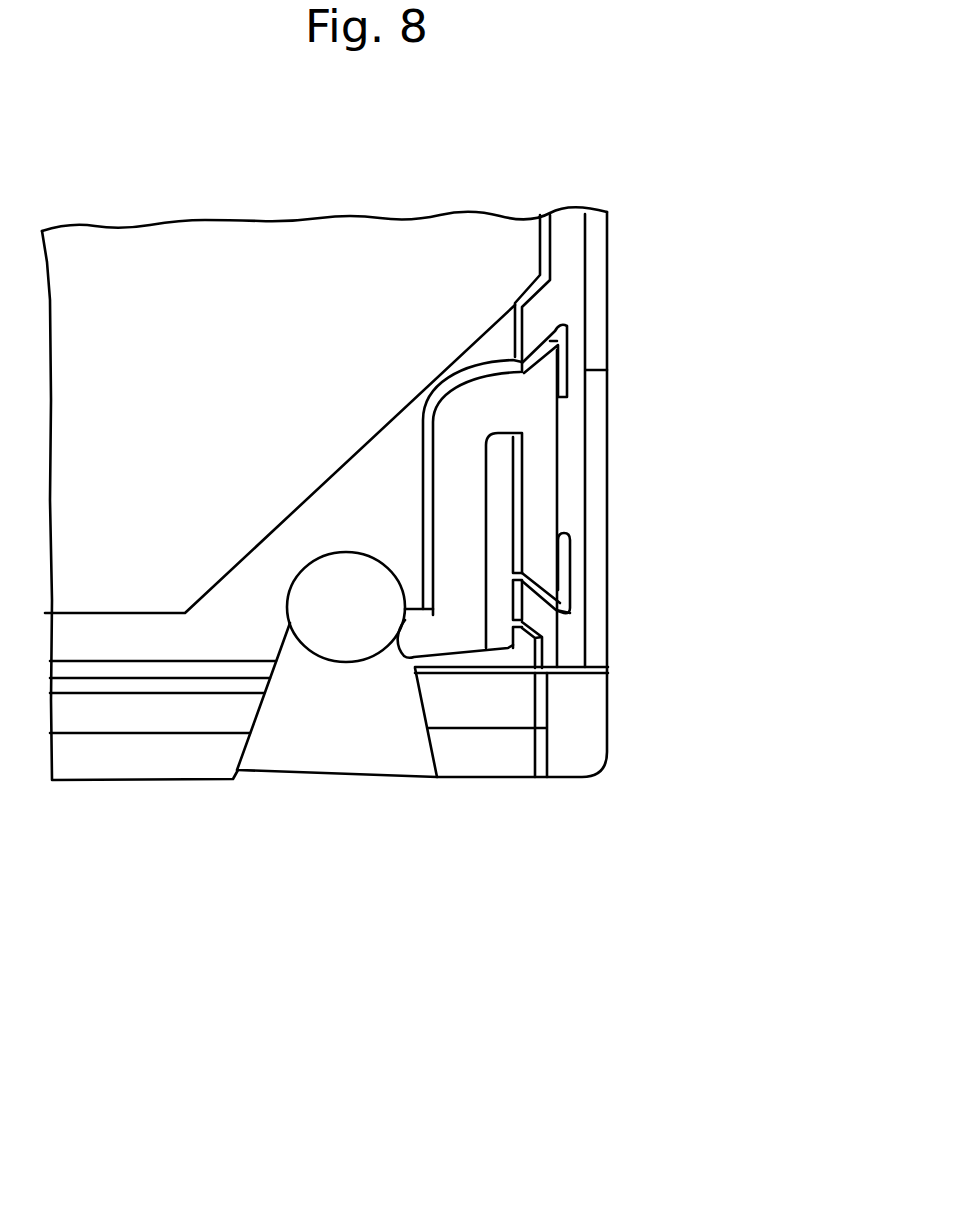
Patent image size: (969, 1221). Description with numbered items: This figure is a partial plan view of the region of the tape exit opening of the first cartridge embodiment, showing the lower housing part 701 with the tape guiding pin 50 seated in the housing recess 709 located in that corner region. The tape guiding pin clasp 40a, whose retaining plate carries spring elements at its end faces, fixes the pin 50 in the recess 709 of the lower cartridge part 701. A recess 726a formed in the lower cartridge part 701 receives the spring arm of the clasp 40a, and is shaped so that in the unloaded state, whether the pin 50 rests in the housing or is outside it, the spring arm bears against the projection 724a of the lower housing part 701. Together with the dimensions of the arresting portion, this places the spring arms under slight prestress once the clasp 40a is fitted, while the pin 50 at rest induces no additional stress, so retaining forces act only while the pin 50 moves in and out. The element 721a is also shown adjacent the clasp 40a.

The lower housing part 701 is at (89, 548).
The tape guiding pin 50 is at (328, 635).
The housing recess 709 is at (372, 728).
The tape guiding pin clasp 40a is at (473, 403).
The recess 726a is at (497, 487).
The engaging claw (722a) 721a is at (567, 575).
The projection 724a is at (430, 585).